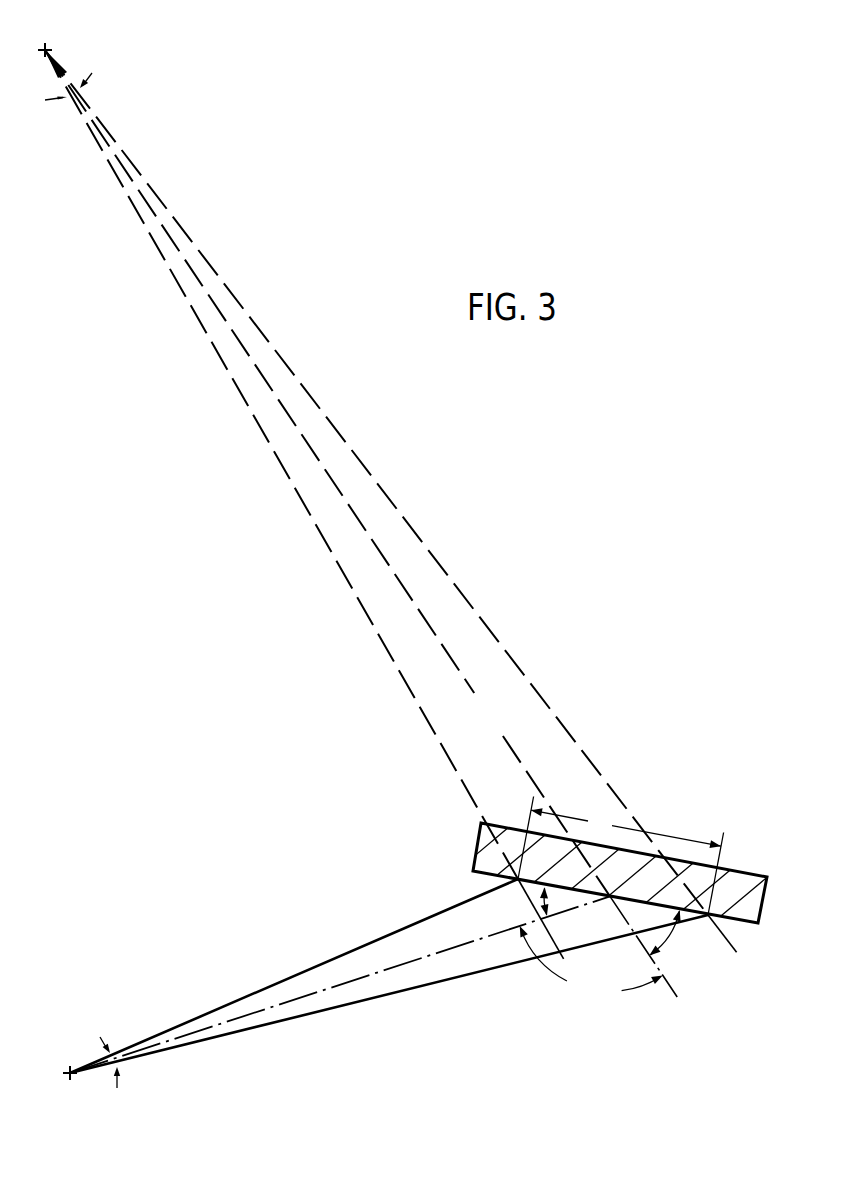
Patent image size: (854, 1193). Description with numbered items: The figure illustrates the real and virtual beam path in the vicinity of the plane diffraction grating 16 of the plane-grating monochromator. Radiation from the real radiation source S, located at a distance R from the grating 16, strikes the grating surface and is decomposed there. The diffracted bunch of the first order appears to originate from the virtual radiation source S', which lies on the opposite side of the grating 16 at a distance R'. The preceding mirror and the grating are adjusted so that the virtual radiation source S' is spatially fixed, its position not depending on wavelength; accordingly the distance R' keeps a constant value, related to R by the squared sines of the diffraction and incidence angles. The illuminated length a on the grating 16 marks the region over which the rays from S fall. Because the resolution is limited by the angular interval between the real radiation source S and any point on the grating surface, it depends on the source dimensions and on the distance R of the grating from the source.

The plane diffraction grating 16 is at (730, 880).
The real radiation source S is at (374, 997).
The virtual radiation source S' is at (387, 482).
The distance of the real radiation source from the grating R is at (340, 984).
The distance of the virtual radiation source from the grating R' is at (361, 523).
The illuminated length on plate a is at (621, 856).